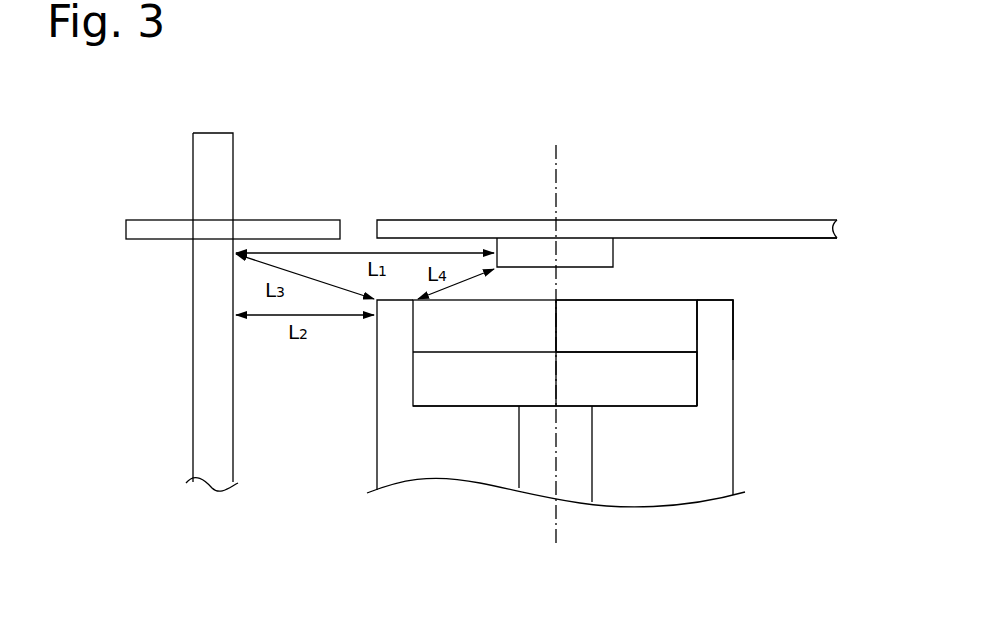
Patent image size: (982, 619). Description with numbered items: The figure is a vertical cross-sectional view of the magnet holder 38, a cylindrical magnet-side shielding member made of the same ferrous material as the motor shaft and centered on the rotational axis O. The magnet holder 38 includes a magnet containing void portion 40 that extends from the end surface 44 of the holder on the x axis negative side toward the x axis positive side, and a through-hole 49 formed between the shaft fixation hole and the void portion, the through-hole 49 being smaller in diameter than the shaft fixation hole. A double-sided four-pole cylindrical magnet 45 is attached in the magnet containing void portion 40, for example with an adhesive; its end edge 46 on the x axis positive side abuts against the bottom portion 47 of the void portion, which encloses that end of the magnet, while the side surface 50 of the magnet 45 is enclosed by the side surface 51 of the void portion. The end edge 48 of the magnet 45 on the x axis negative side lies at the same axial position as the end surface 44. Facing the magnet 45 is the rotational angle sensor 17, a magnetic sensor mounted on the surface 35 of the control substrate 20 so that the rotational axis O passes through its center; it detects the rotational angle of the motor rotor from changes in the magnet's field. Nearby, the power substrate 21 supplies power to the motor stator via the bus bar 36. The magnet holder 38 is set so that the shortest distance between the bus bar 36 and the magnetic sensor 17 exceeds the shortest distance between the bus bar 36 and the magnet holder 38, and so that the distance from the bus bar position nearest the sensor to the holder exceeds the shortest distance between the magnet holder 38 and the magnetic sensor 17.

The rotational axis O is at (556, 158).
The bus bar 36 is at (193, 362).
The power substrate 21 is at (284, 214).
The control substrate 20 is at (738, 214).
The surface of the control substrate 35 is at (798, 240).
The rotational angle sensor 17 is at (620, 251).
The magnet holder 38 is at (741, 395).
The magnet containing void portion 40 is at (668, 294).
The magnet 45 is at (588, 315).
The end edge of the magnet 48 is at (627, 300).
The end surface of the magnet holder 44 is at (720, 300).
The side surface of the magnet containing void portion 51 is at (715, 313).
The side surface of the magnet 50 is at (697, 333).
The bottom portion of the magnet containing void portion 47 is at (678, 406).
The end edge of the magnet 46 is at (655, 406).
The through-hole 49 is at (590, 478).